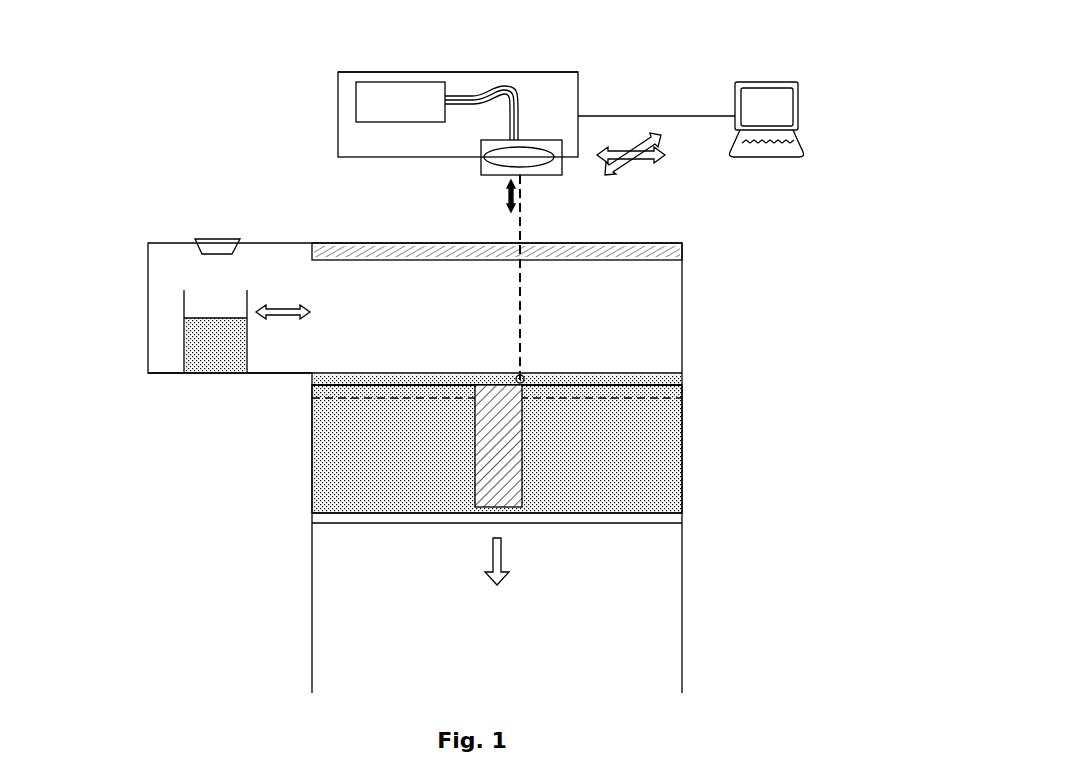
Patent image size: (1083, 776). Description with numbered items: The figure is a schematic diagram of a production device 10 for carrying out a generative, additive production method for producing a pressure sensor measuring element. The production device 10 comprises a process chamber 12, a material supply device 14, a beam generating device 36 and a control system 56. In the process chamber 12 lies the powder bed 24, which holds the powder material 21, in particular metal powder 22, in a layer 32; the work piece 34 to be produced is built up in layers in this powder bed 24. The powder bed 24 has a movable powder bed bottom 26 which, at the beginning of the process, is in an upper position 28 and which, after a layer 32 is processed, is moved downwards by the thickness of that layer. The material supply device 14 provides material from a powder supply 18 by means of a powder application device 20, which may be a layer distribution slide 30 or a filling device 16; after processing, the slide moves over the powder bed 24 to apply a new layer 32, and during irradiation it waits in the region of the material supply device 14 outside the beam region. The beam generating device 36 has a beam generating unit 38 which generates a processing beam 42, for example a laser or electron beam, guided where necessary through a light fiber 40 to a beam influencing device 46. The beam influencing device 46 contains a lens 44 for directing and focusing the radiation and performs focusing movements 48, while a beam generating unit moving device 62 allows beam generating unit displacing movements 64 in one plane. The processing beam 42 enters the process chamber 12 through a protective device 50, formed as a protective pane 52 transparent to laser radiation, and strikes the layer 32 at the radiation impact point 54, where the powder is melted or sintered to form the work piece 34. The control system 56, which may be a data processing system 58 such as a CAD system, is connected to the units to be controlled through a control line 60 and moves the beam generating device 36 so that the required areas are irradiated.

The production device 10 is at (200, 130).
The process chamber 12 is at (632, 308).
The material supply device 14 is at (163, 400).
The filling device 16 is at (208, 245).
The powder supply 18 is at (200, 340).
The powder application device 20 is at (178, 295).
The powder material 21 is at (207, 362).
The metal powder 22 is at (226, 357).
The powder bed 24 is at (602, 469).
The powder bed bottom 26 is at (612, 515).
The upper position 28 is at (672, 393).
The layer distribution slide 30 is at (185, 355).
The layer 32 is at (683, 377).
The work piece 34 is at (505, 480).
The beam generating device 36 is at (378, 72).
The beam generating unit 38 is at (410, 97).
The light fiber 40 is at (500, 88).
The processing beam 42 is at (518, 318).
The lens 44 is at (510, 160).
The beam influencing device 46 is at (546, 176).
The focusing movements 48 is at (505, 200).
The protective device 50 is at (683, 247).
The protective pane 52 is at (640, 250).
The radiation impact point 54 is at (522, 374).
The control system 56 is at (773, 44).
The data processing system 58 is at (800, 130).
The control line 60 is at (607, 116).
The beam generating unit moving device 62 is at (568, 72).
The beam generating unit displacing movements 64 is at (676, 166).